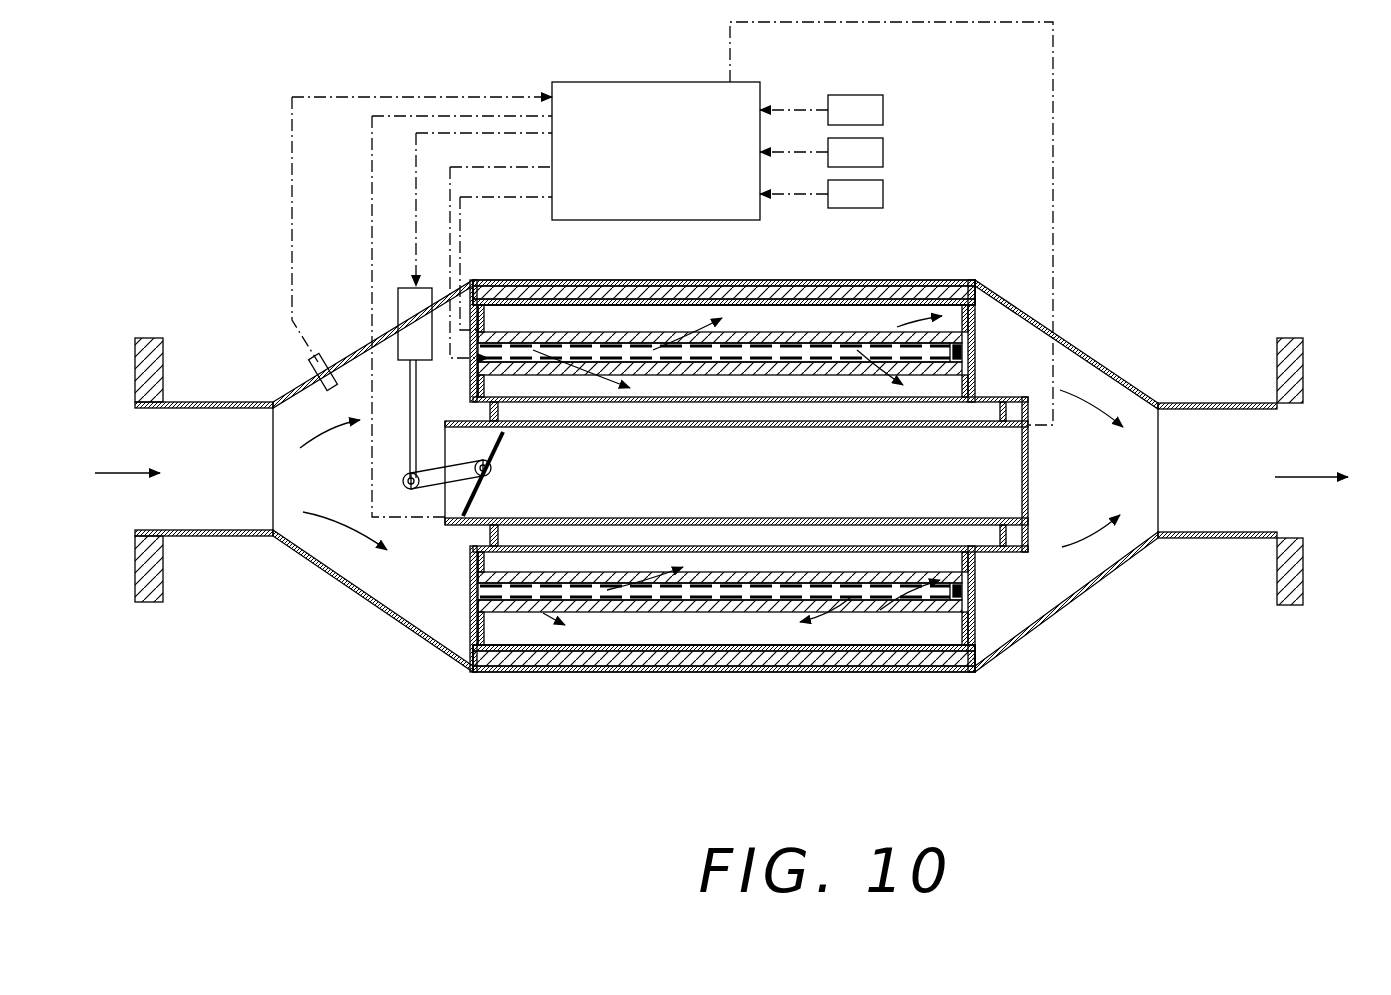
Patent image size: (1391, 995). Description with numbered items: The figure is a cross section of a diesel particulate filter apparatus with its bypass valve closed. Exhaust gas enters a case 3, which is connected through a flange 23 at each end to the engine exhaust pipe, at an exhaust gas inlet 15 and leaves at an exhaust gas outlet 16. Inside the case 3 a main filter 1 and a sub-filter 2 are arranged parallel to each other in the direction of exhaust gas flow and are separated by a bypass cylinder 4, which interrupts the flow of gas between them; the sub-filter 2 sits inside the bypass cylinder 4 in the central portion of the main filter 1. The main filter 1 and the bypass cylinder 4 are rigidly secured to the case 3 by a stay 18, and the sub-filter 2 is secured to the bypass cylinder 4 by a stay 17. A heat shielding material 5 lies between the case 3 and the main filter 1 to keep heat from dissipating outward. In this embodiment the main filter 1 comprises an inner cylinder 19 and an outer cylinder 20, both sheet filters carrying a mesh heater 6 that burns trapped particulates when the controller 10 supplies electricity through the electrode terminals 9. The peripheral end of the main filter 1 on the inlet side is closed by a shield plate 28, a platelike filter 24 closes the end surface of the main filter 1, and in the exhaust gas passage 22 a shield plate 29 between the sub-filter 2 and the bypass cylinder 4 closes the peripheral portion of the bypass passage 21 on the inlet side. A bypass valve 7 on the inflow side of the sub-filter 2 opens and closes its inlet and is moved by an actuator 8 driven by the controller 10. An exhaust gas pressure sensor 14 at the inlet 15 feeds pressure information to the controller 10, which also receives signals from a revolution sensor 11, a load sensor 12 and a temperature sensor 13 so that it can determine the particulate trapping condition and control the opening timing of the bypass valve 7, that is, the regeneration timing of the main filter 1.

The main filter 1 is at (825, 342).
The sub-filter 2 is at (790, 428).
The case 3 is at (1082, 352).
The bypass cylinder 4 is at (675, 403).
The heat shielding material 5 is at (800, 292).
The mesh heater 6 is at (733, 333).
The bypass valve 7 is at (500, 452).
The actuator 8 is at (408, 315).
The electrode terminals 9 is at (490, 333).
The controller 10 is at (620, 167).
The revolution sensor 11 is at (875, 108).
The load sensor 12 is at (875, 152).
The temperature sensor 13 is at (875, 194).
The exhaust gas pressure sensor 14 is at (327, 360).
The exhaust gas inlet 15 is at (184, 490).
The exhaust gas outlet 16 is at (1209, 493).
The stay 17 is at (500, 385).
The stay 18 is at (514, 300).
The inner cylinder 19 is at (745, 358).
The outer cylinder 20 is at (880, 345).
The bypass passage 21 is at (600, 499).
The exhaust gas passage 22 is at (320, 490).
The flange 23 is at (157, 358).
The platelike filter 24 is at (963, 352).
The shield plate 28 is at (475, 330).
The shield plate 29 is at (476, 406).